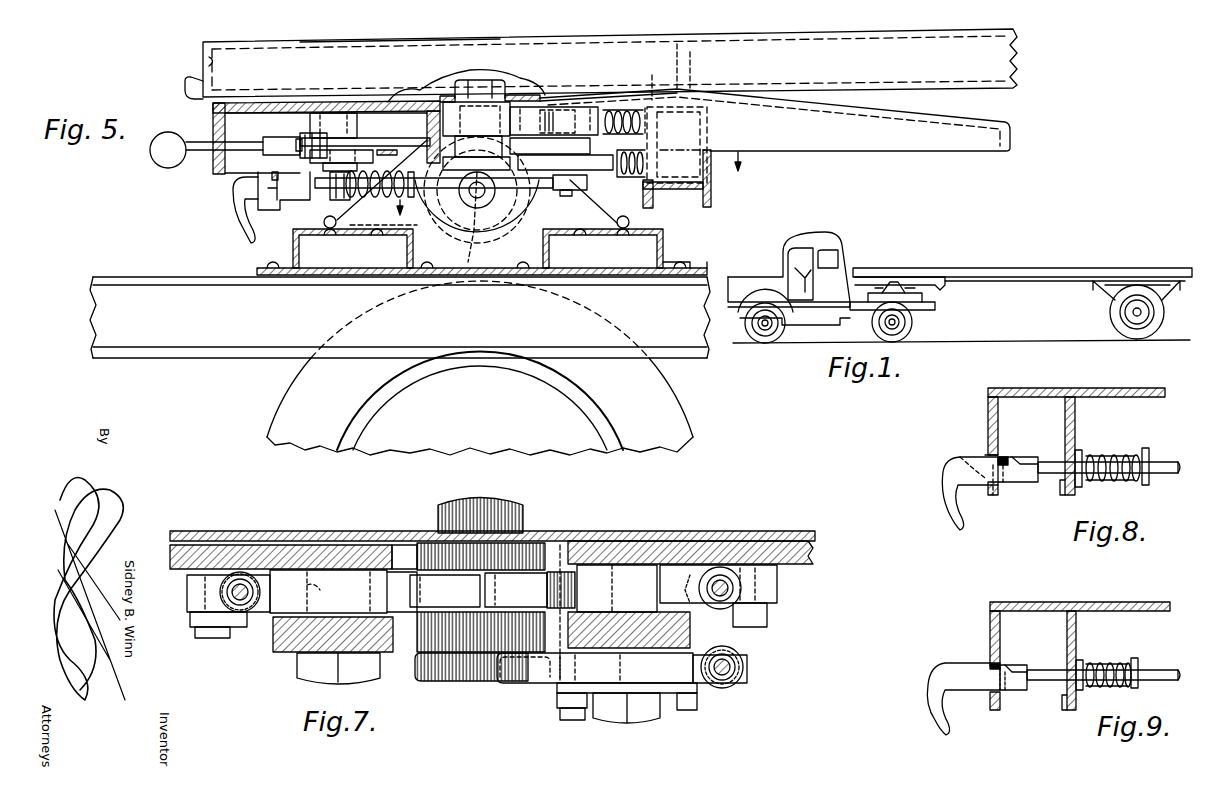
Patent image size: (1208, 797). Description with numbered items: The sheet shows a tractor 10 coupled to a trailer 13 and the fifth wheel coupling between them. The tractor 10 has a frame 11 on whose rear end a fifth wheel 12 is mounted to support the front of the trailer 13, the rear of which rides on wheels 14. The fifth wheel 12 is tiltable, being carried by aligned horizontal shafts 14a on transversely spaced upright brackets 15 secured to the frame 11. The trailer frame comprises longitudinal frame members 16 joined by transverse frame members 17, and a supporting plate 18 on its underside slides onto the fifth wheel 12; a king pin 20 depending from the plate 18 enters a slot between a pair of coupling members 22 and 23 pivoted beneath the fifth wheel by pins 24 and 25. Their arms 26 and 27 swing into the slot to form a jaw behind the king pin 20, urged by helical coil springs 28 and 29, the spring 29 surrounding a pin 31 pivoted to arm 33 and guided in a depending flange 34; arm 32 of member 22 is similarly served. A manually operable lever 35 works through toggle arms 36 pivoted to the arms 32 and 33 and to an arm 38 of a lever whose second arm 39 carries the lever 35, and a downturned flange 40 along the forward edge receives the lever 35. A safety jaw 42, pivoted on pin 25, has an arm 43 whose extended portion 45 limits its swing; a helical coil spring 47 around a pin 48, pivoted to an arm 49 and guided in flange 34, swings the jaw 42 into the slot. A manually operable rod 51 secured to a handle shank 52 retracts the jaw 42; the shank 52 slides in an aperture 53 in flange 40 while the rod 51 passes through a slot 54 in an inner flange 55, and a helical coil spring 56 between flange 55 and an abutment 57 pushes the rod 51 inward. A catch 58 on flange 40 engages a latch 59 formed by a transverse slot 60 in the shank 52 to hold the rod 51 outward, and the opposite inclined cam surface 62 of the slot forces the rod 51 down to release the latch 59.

In FIG. 1, the tractor 10 is at (856, 255).
In FIG. 5, the frame 11 is at (200, 350).
In FIG. 1, the frame 11 is at (933, 312).
In FIG. 5, the fifth wheel 12 is at (272, 102).
In FIG. 1, the fifth wheel 12 is at (940, 290).
In FIG. 8, the fifth wheel 12 is at (1115, 388).
In FIG. 9, the fifth wheel 12 is at (1125, 600).
In FIG. 7, the fifth wheel 12 is at (340, 550).
In FIG. 5, the trailer 13 is at (596, 43).
In FIG. 1, the trailer 13 is at (1077, 266).
In FIG. 1, the wheels 14 is at (1160, 318).
In FIG. 5, the horizontal shafts 14a is at (472, 282).
In FIG. 5, the upright brackets 15 is at (578, 232).
In FIG. 5, the longitudinal frame members 16 is at (381, 43).
In FIG. 1, the longitudinal frame members 16 is at (1023, 278).
In FIG. 5, the transverse frame members 17 is at (692, 52).
In FIG. 5, the supporting plate 18 is at (343, 102).
In FIG. 7, the supporting plate 18 is at (660, 530).
In FIG. 5, the king pin 20 is at (502, 102).
In FIG. 7, the king pin 20 is at (445, 560).
In FIG. 5, the coupling member 22 is at (583, 108).
In FIG. 7, the coupling member 22 is at (358, 585).
In FIG. 7, the coupling member 23 is at (613, 530).
In FIG. 7, the pin 24 is at (328, 591).
In FIG. 7, the pin 25 is at (598, 589).
In FIG. 7, the arm 26 is at (238, 660).
In FIG. 5, the arm 27 is at (538, 110).
In FIG. 7, the arm 27 is at (722, 608).
In FIG. 7, the helical coil spring 28 is at (256, 612).
In FIG. 5, the helical coil spring 29 is at (616, 110).
In FIG. 7, the helical coil spring 29 is at (740, 585).
In FIG. 5, the pin 31 is at (652, 100).
In FIG. 7, the arm 32 is at (268, 575).
In FIG. 7, the arm 33 is at (703, 562).
In FIG. 5, the depending flange 34 is at (672, 191).
In FIG. 5, the manually operable lever 35 is at (178, 165).
In FIG. 5, the toggle arms 36 is at (385, 138).
In FIG. 7, the toggle arms 36 is at (250, 640).
In FIG. 5, the arm 38 is at (300, 137).
In FIG. 5, the second arm 39 is at (298, 146).
In FIG. 5, the downturned flange 40 is at (213, 120).
In FIG. 8, the downturned flange 40 is at (999, 418).
In FIG. 9, the downturned flange 40 is at (990, 637).
In FIG. 5, the safety jaw 42 is at (608, 172).
In FIG. 7, the safety jaw 42 is at (541, 695).
In FIG. 7, the arm 43 is at (522, 680).
In FIG. 7, the extended portion 45 is at (595, 668).
In FIG. 5, the helical coil spring 47 is at (625, 178).
In FIG. 7, the helical coil spring 47 is at (735, 683).
In FIG. 5, the pin 48 is at (668, 152).
In FIG. 7, the pin 48 is at (740, 652).
In FIG. 7, the arm 49 is at (692, 700).
In FIG. 5, the manually operable rod 51 is at (502, 193).
In FIG. 8, the manually operable rod 51 is at (1163, 465).
In FIG. 9, the manually operable rod 51 is at (1158, 671).
In FIG. 7, the manually operable rod 51 is at (678, 708).
In FIG. 5, the handle shank 52 is at (322, 197).
In FIG. 8, the handle shank 52 is at (1024, 482).
In FIG. 9, the handle shank 52 is at (1018, 690).
In FIG. 5, the aperture 53 is at (333, 200).
In FIG. 8, the aperture 53 is at (962, 456).
In FIG. 9, the aperture 53 is at (995, 712).
In FIG. 8, the slot 54 is at (1065, 492).
In FIG. 9, the slot 54 is at (1067, 702).
In FIG. 8, the downturned fifth wheel flange 55 is at (1075, 432).
In FIG. 9, the downturned fifth wheel flange 55 is at (1076, 633).
In FIG. 8, the helical coil spring 56 is at (1114, 455).
In FIG. 9, the helical coil spring 56 is at (1106, 664).
In FIG. 8, the abutment 57 is at (1146, 449).
In FIG. 9, the abutment 57 is at (1136, 660).
In FIG. 8, the catch 58 is at (990, 456).
In FIG. 9, the catch 58 is at (990, 664).
In FIG. 5, the latch 59 is at (275, 172).
In FIG. 8, the latch 59 is at (1004, 456).
In FIG. 9, the latch 59 is at (985, 675).
In FIG. 5, the transverse slot 60 is at (270, 206).
In FIG. 8, the transverse slot 60 is at (1007, 482).
In FIG. 9, the transverse slot 60 is at (992, 690).
In FIG. 8, the cam surface 62 is at (1022, 456).
In FIG. 9, the cam surface 62 is at (1010, 665).